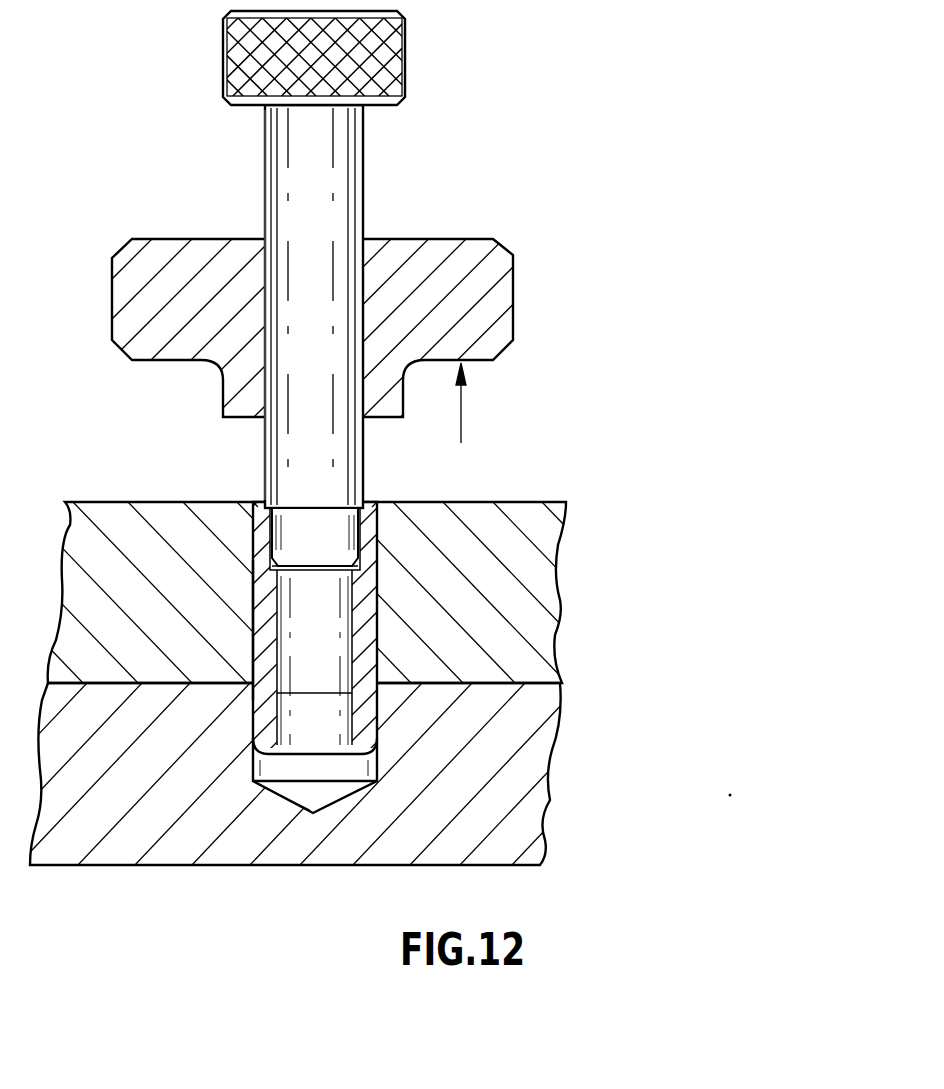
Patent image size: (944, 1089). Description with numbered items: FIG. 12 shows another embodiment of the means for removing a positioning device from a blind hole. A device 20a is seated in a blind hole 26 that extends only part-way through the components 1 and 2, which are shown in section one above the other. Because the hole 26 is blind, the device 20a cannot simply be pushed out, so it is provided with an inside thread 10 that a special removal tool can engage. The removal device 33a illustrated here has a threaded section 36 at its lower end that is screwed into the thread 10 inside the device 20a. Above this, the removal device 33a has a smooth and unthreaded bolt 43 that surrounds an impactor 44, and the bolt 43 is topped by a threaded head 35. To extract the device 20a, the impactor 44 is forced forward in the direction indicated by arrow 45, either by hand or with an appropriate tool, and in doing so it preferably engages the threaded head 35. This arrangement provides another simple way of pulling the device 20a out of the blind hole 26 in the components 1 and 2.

The component 1 is at (115, 515).
The component 2 is at (141, 840).
The inside thread 10 is at (253, 528).
The device 20a is at (377, 588).
The blind hole 26 is at (381, 632).
The device for removing 33a is at (414, 213).
The threaded head 35 is at (398, 60).
The threaded section 36 is at (337, 525).
The smooth and unthreaded bolt 43 is at (347, 177).
The impactor 44 is at (504, 301).
The arrow 45 is at (461, 418).